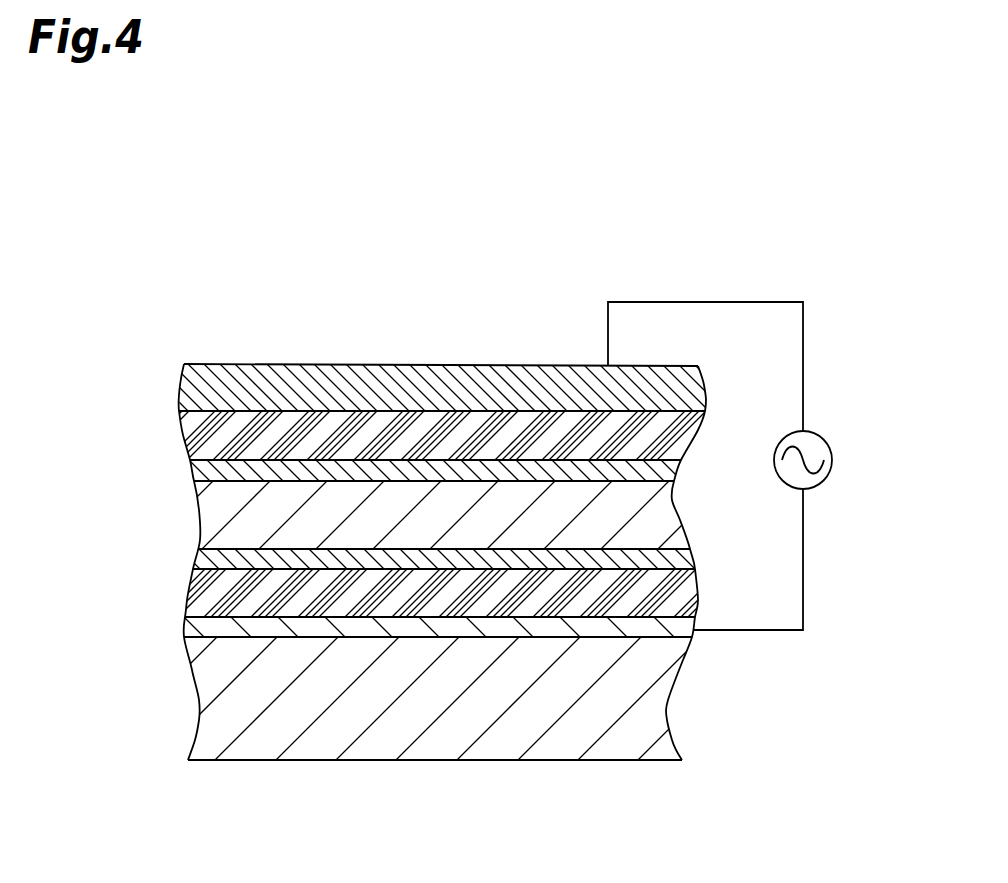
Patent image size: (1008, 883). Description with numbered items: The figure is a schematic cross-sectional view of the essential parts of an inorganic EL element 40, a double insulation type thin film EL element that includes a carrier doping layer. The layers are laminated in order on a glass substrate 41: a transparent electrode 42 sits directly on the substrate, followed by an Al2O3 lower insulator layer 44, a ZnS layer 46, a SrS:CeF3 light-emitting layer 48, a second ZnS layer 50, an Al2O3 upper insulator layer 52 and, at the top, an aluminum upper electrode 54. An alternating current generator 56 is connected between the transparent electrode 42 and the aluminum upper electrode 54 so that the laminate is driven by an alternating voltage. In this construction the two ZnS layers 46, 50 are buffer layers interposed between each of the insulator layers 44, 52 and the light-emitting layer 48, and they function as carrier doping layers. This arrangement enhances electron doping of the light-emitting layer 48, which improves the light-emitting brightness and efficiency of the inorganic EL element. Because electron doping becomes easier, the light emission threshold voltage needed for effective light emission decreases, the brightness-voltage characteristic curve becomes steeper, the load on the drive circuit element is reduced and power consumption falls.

The EL element 40 is at (698, 218).
The glass substrate 41 is at (212, 693).
The transparent electrode 42 is at (195, 628).
The Al2O3 lower insulator layer 44 is at (200, 600).
The ZnS layer 46 is at (198, 563).
The SrS:CeF3 light-emitting layer 48 is at (212, 515).
The ZnS layer 50 is at (195, 477).
The Al2O3 upper insulator layer 52 is at (197, 438).
The aluminum upper electrode 54 is at (196, 391).
The alternating current generator 56 is at (815, 431).